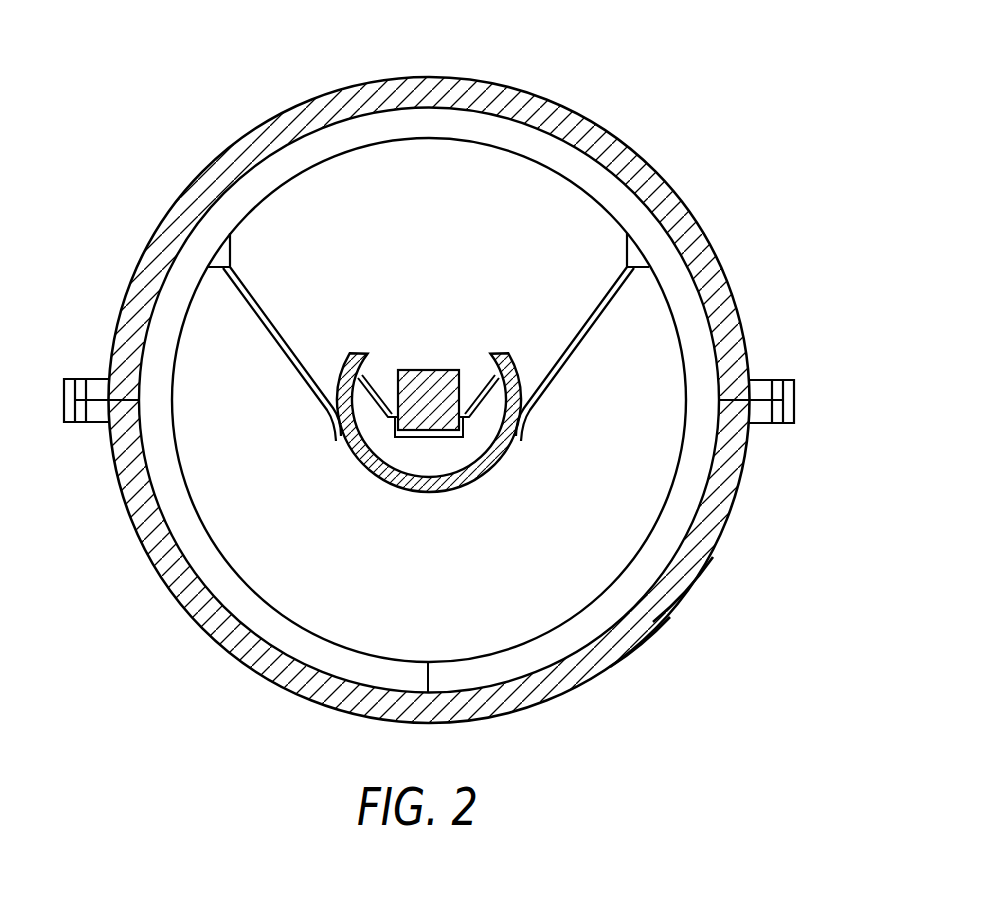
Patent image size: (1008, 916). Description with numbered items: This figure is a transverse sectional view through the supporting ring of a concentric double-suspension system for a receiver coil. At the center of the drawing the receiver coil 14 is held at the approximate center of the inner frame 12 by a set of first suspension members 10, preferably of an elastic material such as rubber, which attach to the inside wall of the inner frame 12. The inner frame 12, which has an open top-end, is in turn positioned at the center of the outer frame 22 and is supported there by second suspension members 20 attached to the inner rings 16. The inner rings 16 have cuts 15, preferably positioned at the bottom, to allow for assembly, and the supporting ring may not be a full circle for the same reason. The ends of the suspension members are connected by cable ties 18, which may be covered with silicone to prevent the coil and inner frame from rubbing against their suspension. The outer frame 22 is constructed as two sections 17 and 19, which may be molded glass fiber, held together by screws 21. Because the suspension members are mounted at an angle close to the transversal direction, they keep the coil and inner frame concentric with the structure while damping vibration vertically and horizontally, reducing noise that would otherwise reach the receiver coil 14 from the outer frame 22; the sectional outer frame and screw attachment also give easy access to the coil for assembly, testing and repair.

The first suspension members 10 is at (482, 393).
The inner frame 12 is at (483, 474).
The receiver coil 14 is at (420, 370).
The cuts 15 is at (428, 677).
The inner rings 16 is at (705, 500).
The outer frame section 17 is at (670, 617).
The cable ties 18 is at (634, 253).
The outer frame section 19 is at (655, 163).
The second suspension members 20 is at (580, 339).
The screws 21 is at (794, 405).
The outer frame 22 is at (713, 557).